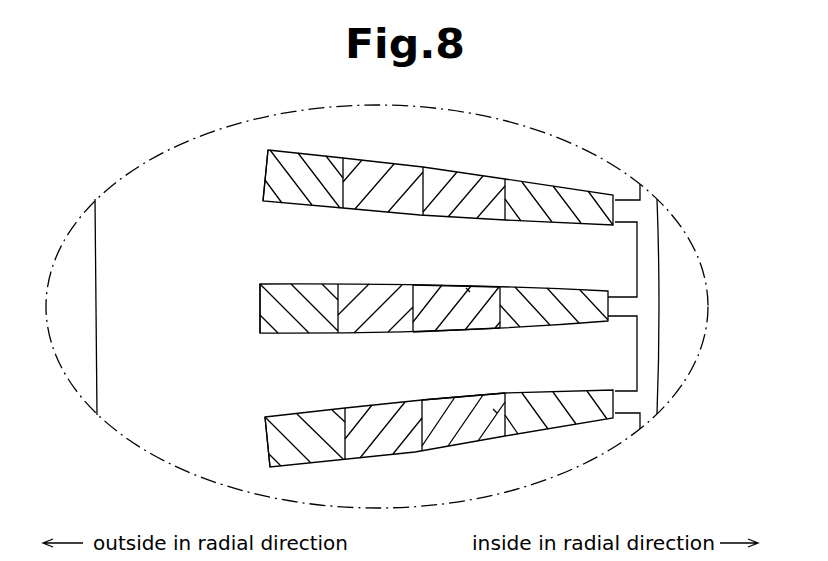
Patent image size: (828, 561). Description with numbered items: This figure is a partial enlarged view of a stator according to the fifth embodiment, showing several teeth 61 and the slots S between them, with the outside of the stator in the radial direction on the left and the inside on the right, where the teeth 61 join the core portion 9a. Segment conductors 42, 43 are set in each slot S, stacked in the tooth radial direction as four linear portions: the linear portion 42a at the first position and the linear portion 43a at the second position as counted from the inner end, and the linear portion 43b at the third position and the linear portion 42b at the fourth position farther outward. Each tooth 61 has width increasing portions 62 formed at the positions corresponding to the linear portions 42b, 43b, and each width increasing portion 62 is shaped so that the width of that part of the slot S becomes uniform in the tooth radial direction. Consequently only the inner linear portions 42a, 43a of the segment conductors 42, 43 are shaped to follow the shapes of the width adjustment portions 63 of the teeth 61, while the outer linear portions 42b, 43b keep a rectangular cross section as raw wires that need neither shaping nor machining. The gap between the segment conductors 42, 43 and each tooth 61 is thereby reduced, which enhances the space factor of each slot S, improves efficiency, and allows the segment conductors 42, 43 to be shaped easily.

The yoke (rotor core inner portion) 9a is at (625, 300).
The tooth 61 is at (458, 235).
The width increasing portion 62 is at (301, 201).
The width adjustment portion 63 is at (442, 284).
The segment conductor 42 is at (560, 288).
The linear portion 42a is at (566, 320).
The linear portion 42b is at (318, 333).
The segment conductor 43 is at (497, 287).
The linear portion 43a is at (462, 326).
The linear portion 43b is at (368, 333).
The slot S is at (470, 286).